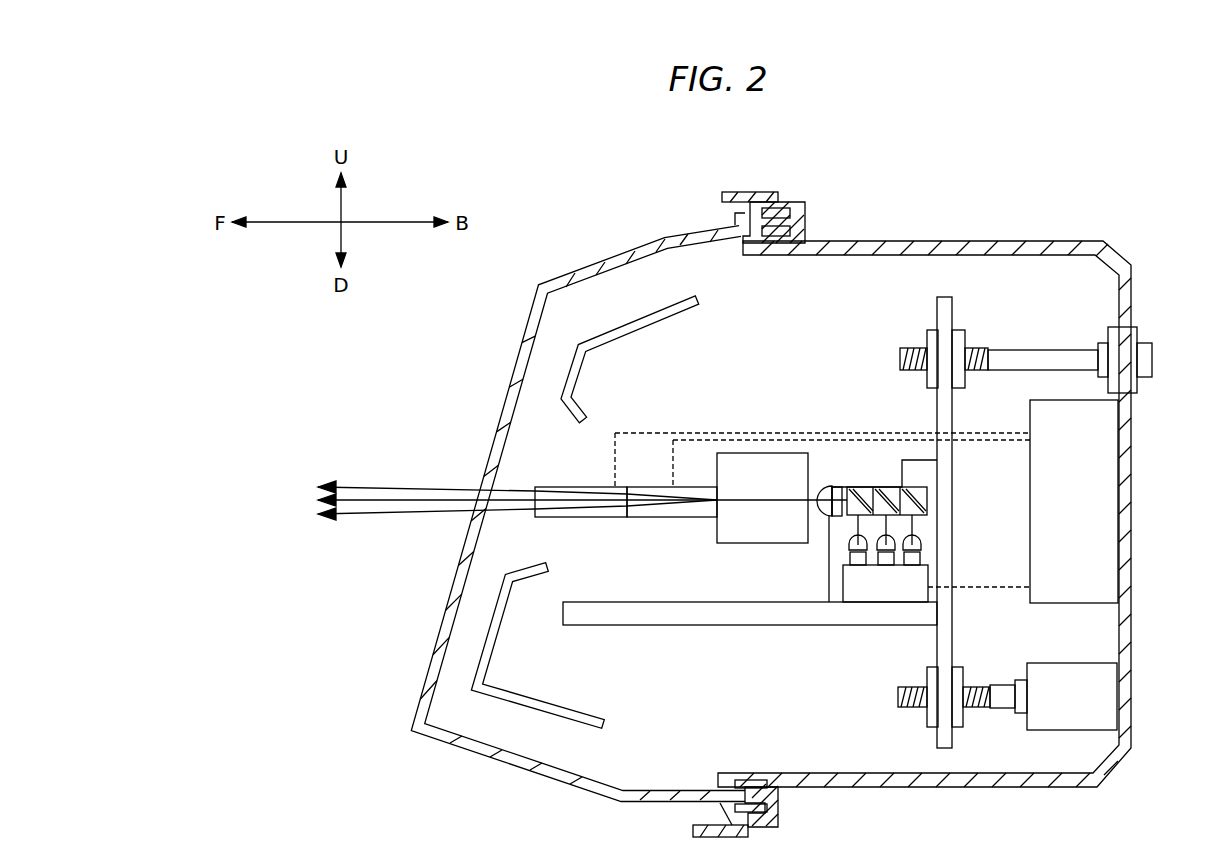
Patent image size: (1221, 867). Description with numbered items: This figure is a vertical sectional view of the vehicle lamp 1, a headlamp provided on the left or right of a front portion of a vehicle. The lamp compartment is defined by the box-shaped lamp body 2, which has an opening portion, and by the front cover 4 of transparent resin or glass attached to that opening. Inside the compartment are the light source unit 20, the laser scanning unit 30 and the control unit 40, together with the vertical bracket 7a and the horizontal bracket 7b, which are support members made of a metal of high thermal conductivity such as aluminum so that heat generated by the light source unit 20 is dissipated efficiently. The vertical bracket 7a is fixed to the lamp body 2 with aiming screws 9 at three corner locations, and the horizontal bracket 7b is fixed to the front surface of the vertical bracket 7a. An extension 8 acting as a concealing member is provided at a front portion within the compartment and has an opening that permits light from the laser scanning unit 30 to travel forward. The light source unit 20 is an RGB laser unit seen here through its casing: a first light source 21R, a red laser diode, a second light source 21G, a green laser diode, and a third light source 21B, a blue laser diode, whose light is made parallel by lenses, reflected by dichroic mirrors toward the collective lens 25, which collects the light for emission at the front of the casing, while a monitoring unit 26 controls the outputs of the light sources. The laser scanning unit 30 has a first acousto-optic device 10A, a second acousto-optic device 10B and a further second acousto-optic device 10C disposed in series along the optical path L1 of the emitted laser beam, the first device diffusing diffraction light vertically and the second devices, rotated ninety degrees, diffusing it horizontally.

The vehicle lamp 1 is at (1058, 188).
The lamp body 2 is at (1118, 258).
The front cover 4 is at (633, 253).
The vertical bracket 7a is at (940, 293).
The horizontal bracket 7b is at (627, 615).
The extension 8 is at (618, 328).
The aiming screws 9 is at (1030, 355).
The first acousto-optic device 10A is at (764, 533).
The second acousto-optic device 10B is at (660, 513).
The second acousto-optic device 10C is at (587, 513).
The light source unit 20 is at (874, 480).
The first light source 21R is at (856, 566).
The second light source 21G is at (886, 566).
The third light source 21B is at (912, 566).
The collective lens 25 is at (830, 487).
The monitoring unit 26 is at (930, 473).
The laser scanning unit 30 is at (696, 425).
The control unit 40 is at (1093, 517).
The optical path L1 is at (818, 497).